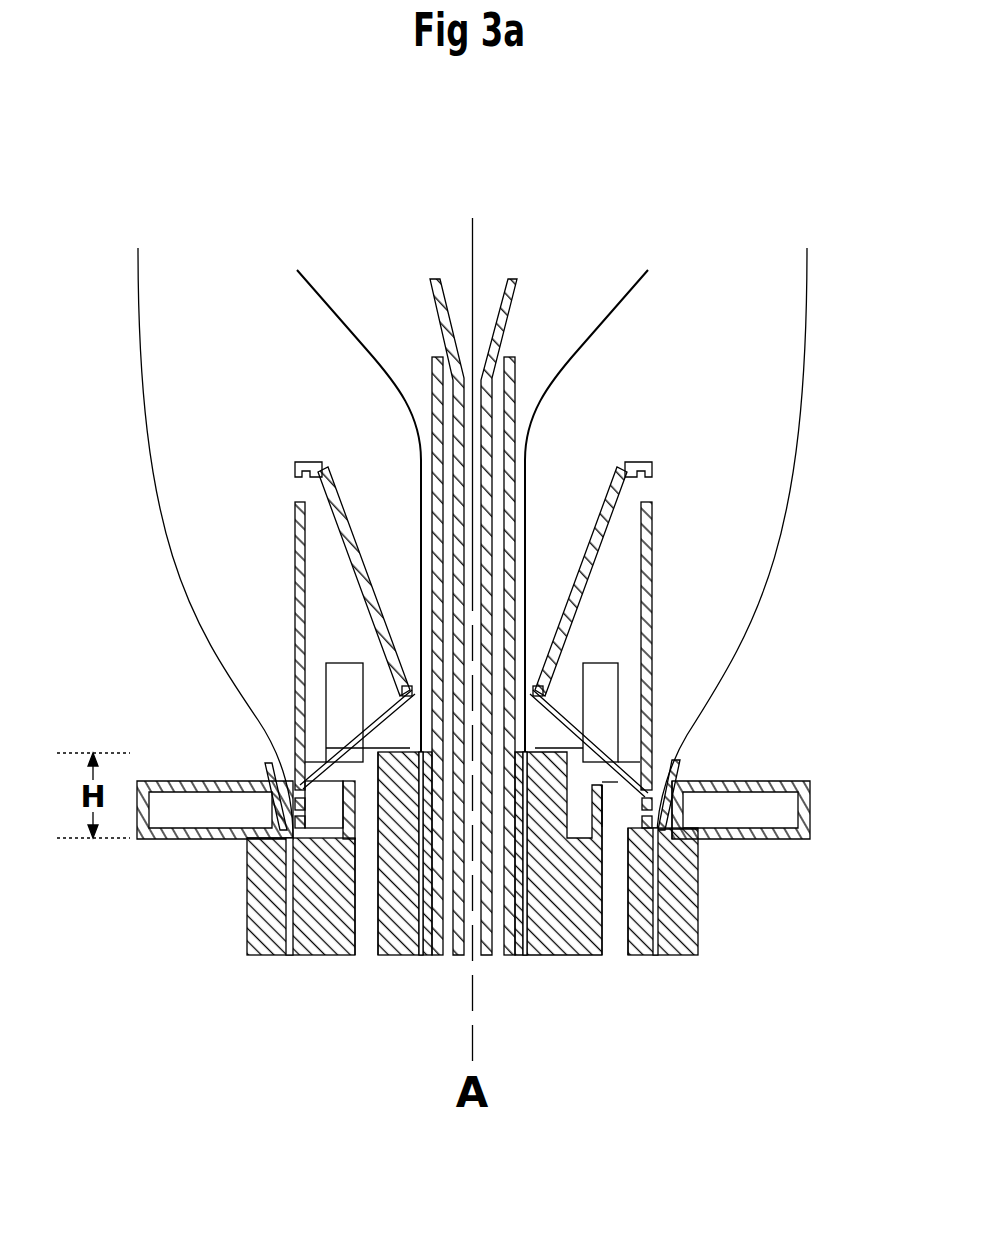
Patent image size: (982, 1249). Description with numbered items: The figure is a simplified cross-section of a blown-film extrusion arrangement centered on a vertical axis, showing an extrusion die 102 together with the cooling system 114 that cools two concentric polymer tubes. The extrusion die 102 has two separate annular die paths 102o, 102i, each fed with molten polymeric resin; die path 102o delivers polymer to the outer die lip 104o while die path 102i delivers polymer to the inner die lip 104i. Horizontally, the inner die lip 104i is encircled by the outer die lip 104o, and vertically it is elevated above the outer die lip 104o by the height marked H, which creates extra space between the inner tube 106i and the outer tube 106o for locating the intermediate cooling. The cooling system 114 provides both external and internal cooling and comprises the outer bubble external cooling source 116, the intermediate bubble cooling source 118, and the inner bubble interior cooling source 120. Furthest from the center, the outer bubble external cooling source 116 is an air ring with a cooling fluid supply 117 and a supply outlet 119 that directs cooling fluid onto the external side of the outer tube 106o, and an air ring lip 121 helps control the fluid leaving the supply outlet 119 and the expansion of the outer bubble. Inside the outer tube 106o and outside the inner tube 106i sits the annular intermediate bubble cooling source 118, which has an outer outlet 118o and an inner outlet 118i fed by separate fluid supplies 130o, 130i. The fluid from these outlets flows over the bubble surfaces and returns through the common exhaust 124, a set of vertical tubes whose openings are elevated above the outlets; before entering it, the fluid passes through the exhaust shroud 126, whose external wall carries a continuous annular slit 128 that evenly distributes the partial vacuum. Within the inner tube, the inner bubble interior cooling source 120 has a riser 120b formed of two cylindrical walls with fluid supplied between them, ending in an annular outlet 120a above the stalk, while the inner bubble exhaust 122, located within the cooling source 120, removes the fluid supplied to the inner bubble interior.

The extrusion die 102 is at (192, 1050).
The outer annular die path 102o is at (289, 957).
The inner annular die path 102i is at (420, 957).
The inner die lip 104i is at (418, 745).
The outer die lip 104o is at (250, 845).
The inner tube 106i is at (628, 310).
The outer tube 106o is at (138, 316).
The cooling system 114 is at (800, 588).
The outer bubble external cooling source 116 is at (128, 852).
The cooling fluid supply 117 is at (765, 807).
The intermediate bubble cooling source 118 is at (235, 587).
The inner outlet 118i is at (330, 750).
The outer outlet 118o is at (283, 795).
The supply outlet 119 is at (278, 825).
The inner bubble interior cooling source 120 is at (477, 170).
The outlet 120a is at (498, 358).
The riser 120b is at (430, 363).
The air ring lip 121 is at (678, 770).
The inner bubble exhaust 122 is at (457, 288).
The common exhaust 124 is at (612, 590).
The exhaust shroud 126 is at (310, 465).
The annular slit 128 is at (300, 492).
The inner fluid supply 130i is at (366, 957).
The outer fluid supply 130o is at (613, 957).